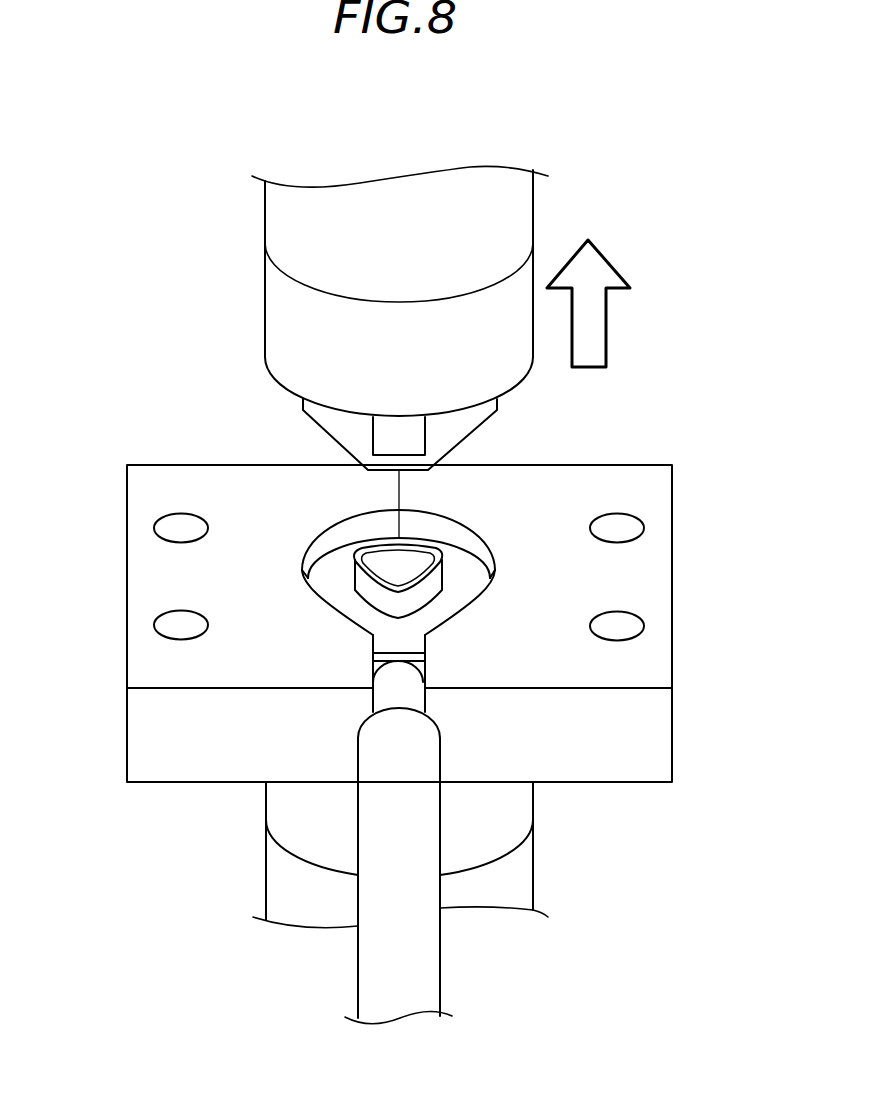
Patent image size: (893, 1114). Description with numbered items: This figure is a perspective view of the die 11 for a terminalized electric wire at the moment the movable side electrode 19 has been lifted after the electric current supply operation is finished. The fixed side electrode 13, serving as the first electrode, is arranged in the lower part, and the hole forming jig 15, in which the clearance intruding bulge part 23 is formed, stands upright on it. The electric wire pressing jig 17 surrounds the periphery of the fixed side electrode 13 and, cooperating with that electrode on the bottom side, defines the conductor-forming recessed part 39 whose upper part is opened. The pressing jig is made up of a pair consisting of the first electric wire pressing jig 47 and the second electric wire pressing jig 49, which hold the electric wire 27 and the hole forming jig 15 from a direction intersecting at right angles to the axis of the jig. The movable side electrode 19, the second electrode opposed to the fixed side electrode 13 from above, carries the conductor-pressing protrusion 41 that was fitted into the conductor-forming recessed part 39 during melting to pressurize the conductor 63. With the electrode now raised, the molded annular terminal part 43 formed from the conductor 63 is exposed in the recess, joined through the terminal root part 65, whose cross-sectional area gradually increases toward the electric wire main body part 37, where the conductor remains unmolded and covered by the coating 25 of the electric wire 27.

The die for a terminalized electric wire 11 is at (128, 305).
The fixed side electrode 13 is at (252, 893).
The hole forming jig 15 is at (355, 578).
The electric wire pressing jig 17 is at (173, 450).
The movable side electrode 19 is at (250, 211).
The clearance intruding bulge part 23 is at (395, 584).
The coating 25 is at (393, 705).
The electric wire 27 is at (345, 972).
The electric wire main body part 37 is at (370, 833).
The conductor-forming recessed part 39 is at (457, 540).
The conductor-pressing protrusion 41 is at (333, 437).
The annular terminal part 43 is at (470, 577).
The first electric wire pressing jig 47 is at (672, 572).
The second electric wire pressing jig 49 is at (127, 573).
The conductor 63 is at (395, 675).
The terminal root part 65 is at (408, 642).